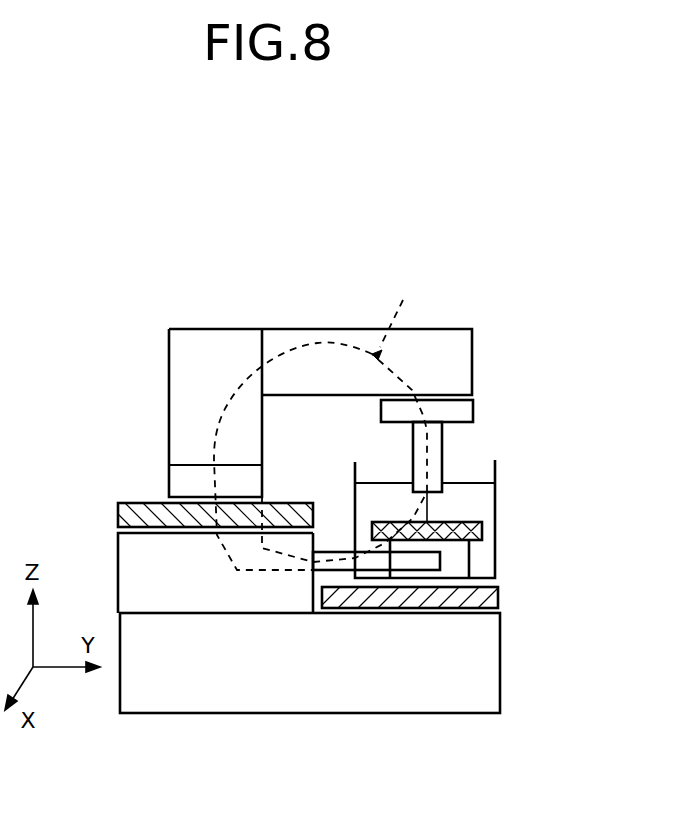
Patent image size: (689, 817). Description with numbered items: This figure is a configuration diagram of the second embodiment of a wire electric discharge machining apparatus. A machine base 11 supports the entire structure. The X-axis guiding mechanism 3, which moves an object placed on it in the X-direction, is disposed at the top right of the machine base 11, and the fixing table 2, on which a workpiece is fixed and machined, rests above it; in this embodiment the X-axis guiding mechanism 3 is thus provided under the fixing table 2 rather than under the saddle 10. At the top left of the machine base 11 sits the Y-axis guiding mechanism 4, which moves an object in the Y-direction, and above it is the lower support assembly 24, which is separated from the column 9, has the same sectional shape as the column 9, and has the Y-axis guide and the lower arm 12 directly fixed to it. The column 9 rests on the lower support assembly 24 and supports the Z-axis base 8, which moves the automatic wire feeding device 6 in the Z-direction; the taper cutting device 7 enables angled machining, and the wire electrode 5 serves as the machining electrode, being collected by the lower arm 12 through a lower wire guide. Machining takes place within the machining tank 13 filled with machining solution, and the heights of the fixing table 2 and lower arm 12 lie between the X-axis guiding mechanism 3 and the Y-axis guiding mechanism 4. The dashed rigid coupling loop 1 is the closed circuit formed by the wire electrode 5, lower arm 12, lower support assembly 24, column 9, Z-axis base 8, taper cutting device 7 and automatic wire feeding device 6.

The rigid coupling loop 1 is at (320, 423).
The fixing table 2 is at (482, 530).
The X-axis guiding mechanism 3 is at (498, 596).
The Y-axis guiding mechanism 4 is at (118, 512).
The wire electrode 5 is at (427, 510).
The automatic wire feeding device 6 is at (442, 452).
The taper cutting device 7 is at (473, 407).
The Z-axis base 8 is at (472, 338).
The column 9 is at (169, 350).
The saddle 10 is at (130, 567).
The machine base 11 is at (500, 645).
The lower arm 12 is at (440, 557).
The machining tank 13 is at (495, 498).
The lower support assembly 24 is at (178, 483).